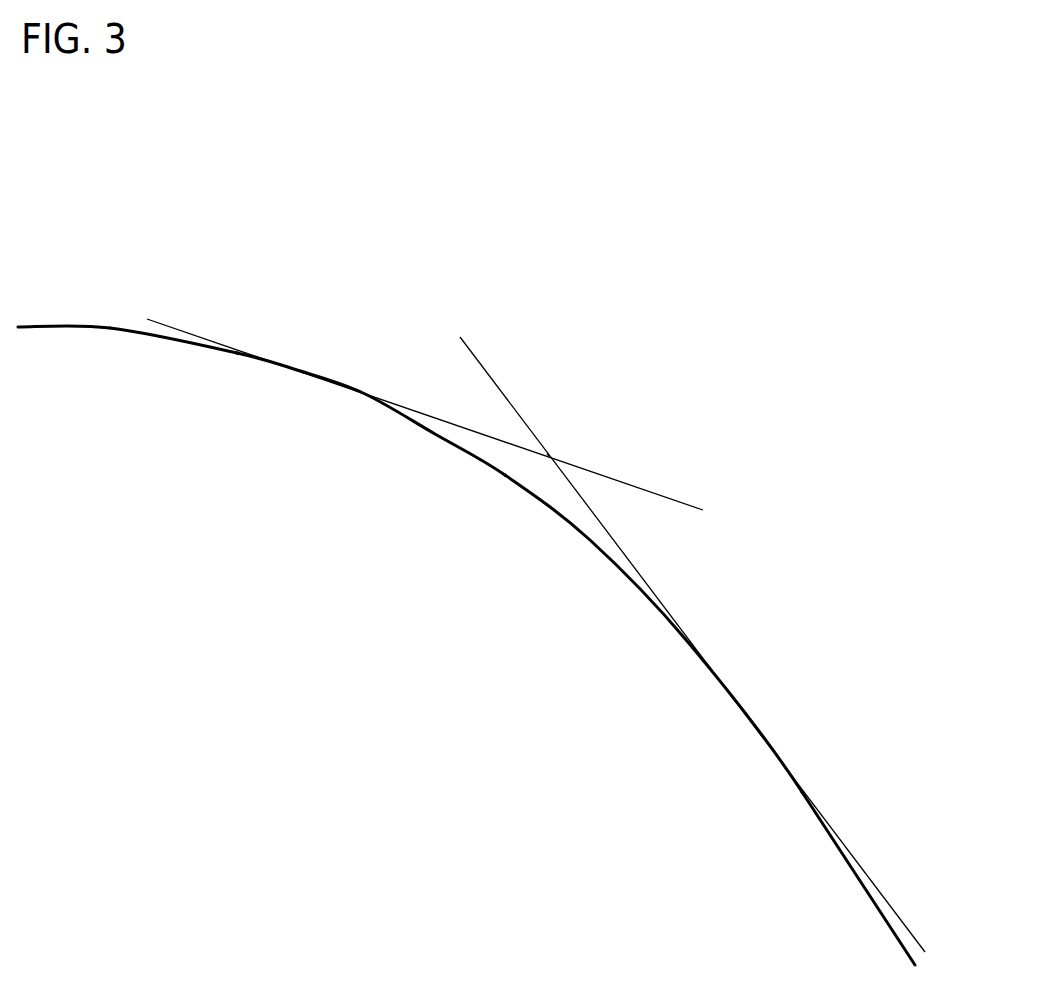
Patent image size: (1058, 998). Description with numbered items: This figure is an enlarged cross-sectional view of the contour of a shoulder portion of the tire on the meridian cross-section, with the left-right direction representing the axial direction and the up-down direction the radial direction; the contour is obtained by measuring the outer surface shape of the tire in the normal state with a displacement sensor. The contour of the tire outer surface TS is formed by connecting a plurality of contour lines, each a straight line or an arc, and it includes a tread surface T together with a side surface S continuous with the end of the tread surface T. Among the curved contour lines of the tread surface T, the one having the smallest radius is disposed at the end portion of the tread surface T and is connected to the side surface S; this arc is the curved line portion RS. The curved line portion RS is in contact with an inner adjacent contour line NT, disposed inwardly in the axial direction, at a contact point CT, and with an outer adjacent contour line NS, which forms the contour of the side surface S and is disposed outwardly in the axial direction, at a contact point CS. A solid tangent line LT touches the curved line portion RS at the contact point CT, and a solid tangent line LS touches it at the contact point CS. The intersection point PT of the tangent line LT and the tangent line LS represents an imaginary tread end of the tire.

The tire outer surface TS is at (43, 327).
The tread surface T is at (112, 328).
The contact point CT is at (302, 368).
The inner adjacent contour line NT is at (238, 352).
The tangent line LS is at (476, 360).
The intersection point PT is at (549, 454).
The tangent line LT is at (677, 494).
The curved line portion RS is at (505, 475).
The contact point CS is at (757, 727).
The outer adjacent contour line NS is at (802, 792).
The side surface S is at (893, 923).